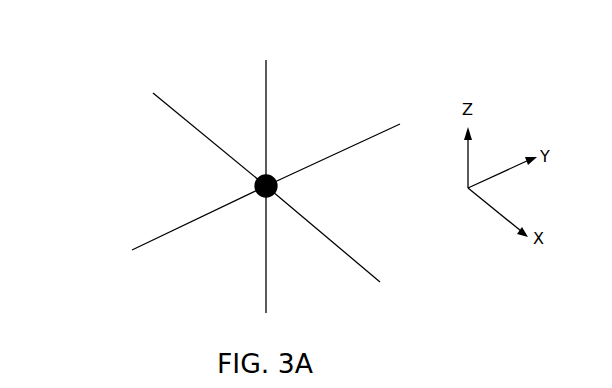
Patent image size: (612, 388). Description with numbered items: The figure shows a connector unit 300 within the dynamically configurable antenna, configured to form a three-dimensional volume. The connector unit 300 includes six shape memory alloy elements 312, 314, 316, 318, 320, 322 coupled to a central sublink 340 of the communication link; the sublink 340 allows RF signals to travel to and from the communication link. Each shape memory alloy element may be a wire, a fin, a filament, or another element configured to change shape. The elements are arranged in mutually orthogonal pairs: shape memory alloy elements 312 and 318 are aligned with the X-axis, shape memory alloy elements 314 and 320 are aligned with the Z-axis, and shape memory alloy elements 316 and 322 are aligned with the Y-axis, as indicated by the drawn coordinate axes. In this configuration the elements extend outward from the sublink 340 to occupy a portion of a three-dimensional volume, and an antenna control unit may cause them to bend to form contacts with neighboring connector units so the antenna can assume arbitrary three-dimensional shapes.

The connector unit 300 is at (116, 60).
The shape memory alloy element 312 is at (182, 117).
The shape memory alloy element 314 is at (265, 88).
The shape memory alloy element 316 is at (357, 143).
The shape memory alloy element 318 is at (350, 256).
The shape memory alloy element 320 is at (267, 296).
The shape memory alloy element 322 is at (183, 227).
The sublink 340 is at (255, 186).